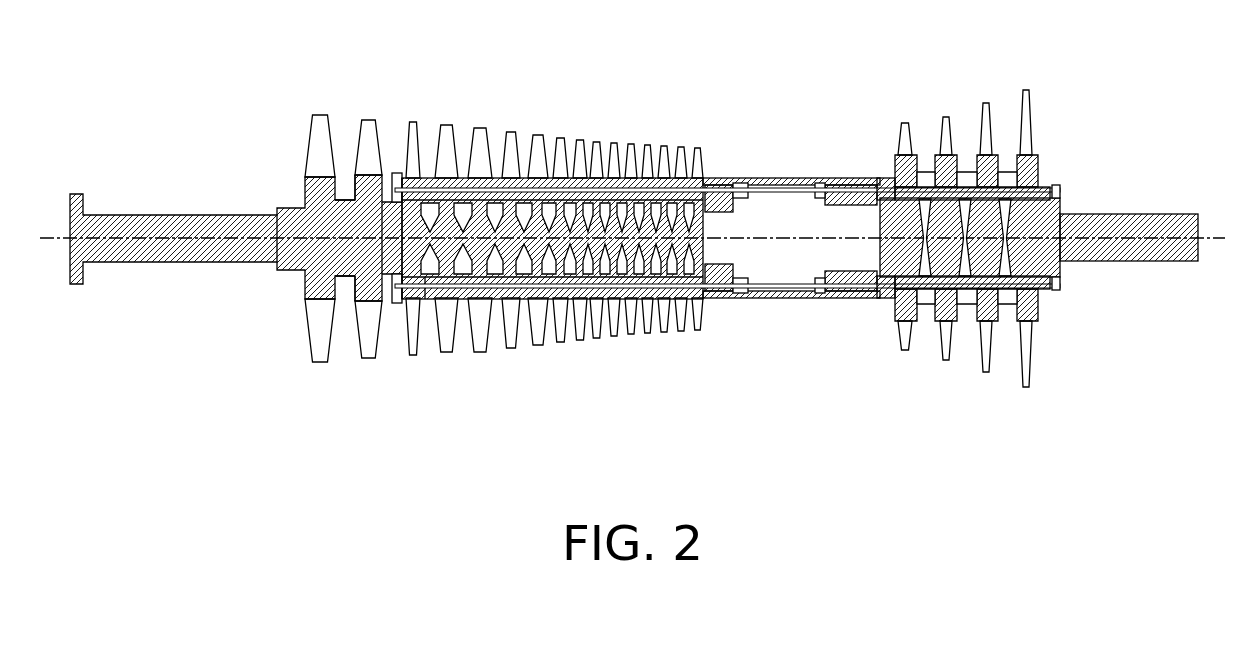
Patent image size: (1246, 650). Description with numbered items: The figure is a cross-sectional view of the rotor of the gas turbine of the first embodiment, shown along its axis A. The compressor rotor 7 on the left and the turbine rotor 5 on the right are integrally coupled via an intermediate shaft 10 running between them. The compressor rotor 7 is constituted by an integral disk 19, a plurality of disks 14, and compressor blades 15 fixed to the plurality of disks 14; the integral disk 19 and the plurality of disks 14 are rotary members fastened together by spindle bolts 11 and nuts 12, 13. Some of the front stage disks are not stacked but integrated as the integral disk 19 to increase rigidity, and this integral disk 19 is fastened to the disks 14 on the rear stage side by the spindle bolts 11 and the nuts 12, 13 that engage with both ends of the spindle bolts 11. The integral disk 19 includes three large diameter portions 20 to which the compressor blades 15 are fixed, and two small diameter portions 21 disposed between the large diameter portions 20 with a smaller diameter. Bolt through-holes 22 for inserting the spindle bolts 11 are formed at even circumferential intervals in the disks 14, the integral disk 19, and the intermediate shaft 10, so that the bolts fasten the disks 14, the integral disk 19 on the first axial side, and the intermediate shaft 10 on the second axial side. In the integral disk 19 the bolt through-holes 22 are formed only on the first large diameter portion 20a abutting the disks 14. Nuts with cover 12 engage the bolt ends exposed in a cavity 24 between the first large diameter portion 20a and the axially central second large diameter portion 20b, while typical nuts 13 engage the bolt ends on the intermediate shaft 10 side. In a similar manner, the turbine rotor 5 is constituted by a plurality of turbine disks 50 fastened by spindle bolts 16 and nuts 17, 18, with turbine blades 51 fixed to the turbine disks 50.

The turbine rotor 5 is at (964, 410).
The compressor rotor 7 is at (504, 410).
The intermediate shaft 10 is at (772, 178).
The spindle bolt 11 is at (587, 292).
The nut with cover 12 is at (394, 300).
The nut 13 is at (738, 294).
The disk 14 is at (562, 307).
The compressor blade 15 is at (648, 328).
The spindle bolt 16 is at (883, 290).
The nut 17 is at (817, 292).
The nut 18 is at (1062, 286).
The integral disk 19 is at (353, 255).
The large diameter portion 20 is at (306, 190).
The first large diameter portion 20a is at (405, 180).
The second large diameter portion 20b is at (350, 190).
The small diameter portion 21 is at (378, 186).
The bolt through-hole 22 is at (426, 300).
The cavity 24 is at (388, 288).
The turbine disk 50 is at (945, 140).
The turbine blade 51 is at (945, 358).
The axis A is at (1217, 242).